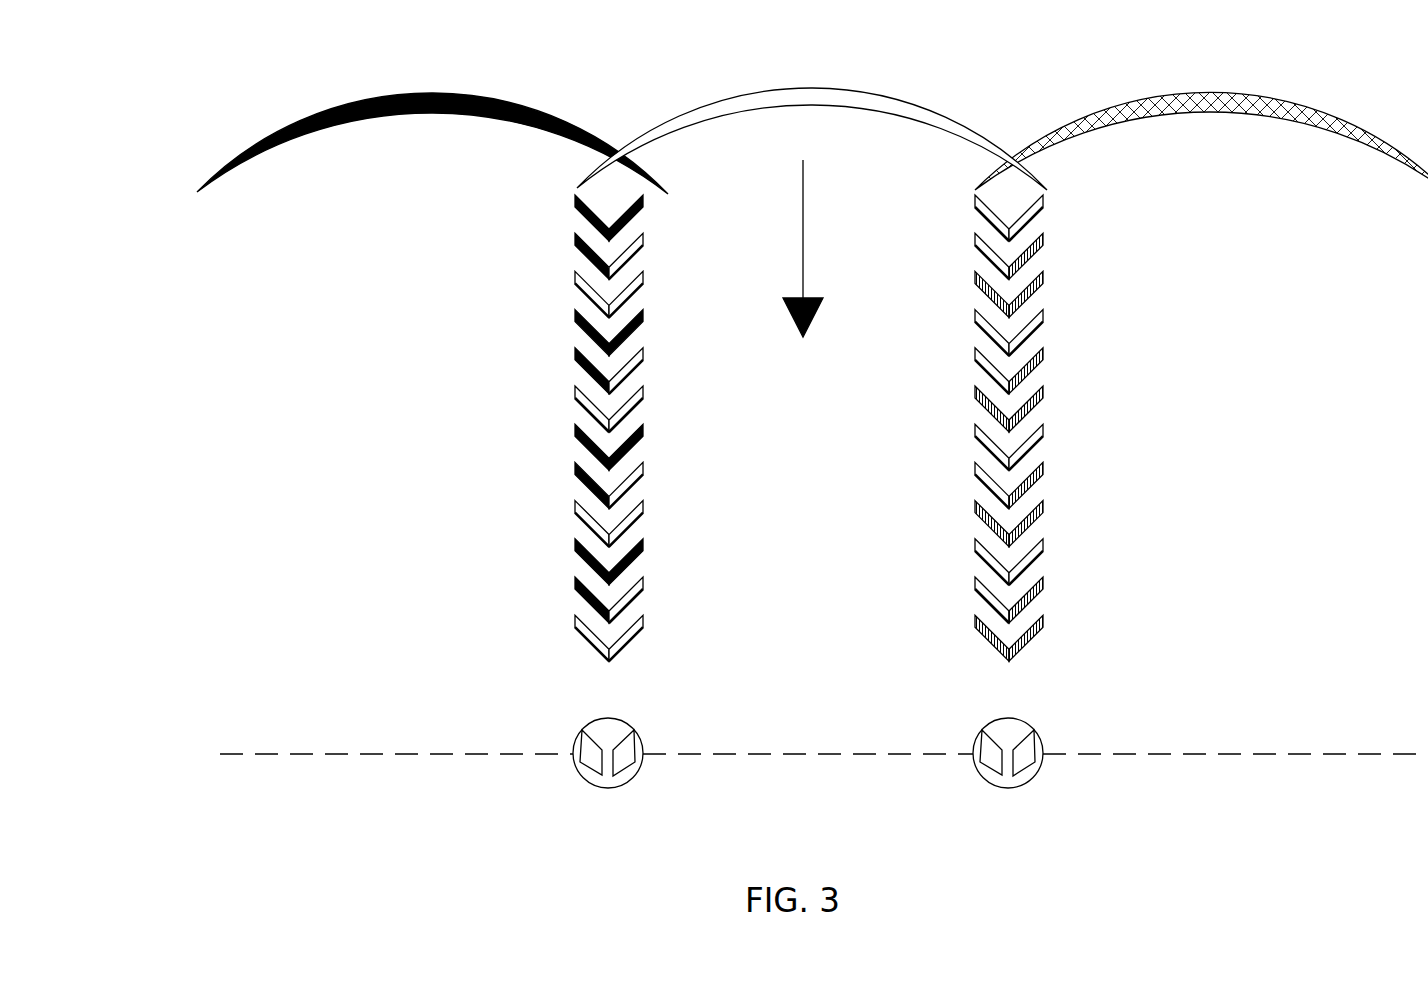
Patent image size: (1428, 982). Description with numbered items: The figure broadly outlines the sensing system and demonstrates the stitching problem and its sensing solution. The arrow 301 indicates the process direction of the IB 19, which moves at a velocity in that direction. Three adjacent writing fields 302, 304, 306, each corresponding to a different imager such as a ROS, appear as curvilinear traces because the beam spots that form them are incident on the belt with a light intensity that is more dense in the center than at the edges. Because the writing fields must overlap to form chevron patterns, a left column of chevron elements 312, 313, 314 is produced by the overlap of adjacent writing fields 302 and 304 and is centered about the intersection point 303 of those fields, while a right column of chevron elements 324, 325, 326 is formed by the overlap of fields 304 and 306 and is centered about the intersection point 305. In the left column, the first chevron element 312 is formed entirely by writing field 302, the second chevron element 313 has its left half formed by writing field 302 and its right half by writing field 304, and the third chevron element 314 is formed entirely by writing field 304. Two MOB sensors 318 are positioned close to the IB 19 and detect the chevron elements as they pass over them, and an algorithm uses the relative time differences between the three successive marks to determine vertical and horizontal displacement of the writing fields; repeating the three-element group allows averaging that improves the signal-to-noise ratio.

The IB 19 is at (358, 354).
The arrow 301 is at (803, 172).
The writing field 302 is at (308, 123).
The intersection point 303 is at (617, 153).
The writing field 304 is at (763, 95).
The intersection point 305 is at (1012, 157).
The writing field 306 is at (1190, 92).
The first chevron element 312 is at (576, 199).
The second chevron element 313 is at (576, 237).
The third chevron element 314 is at (576, 275).
The MOB sensor 318 is at (576, 771).
The chevron element 324 is at (1043, 205).
The chevron element 325 is at (1043, 240).
The chevron element 326 is at (1043, 280).